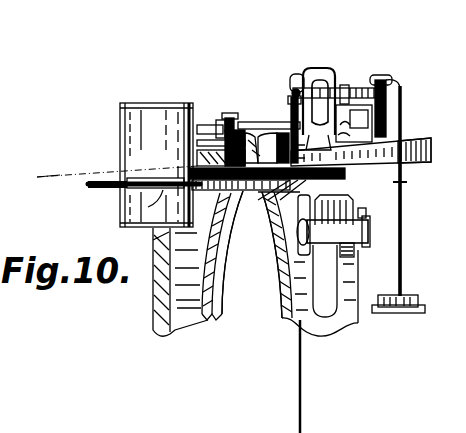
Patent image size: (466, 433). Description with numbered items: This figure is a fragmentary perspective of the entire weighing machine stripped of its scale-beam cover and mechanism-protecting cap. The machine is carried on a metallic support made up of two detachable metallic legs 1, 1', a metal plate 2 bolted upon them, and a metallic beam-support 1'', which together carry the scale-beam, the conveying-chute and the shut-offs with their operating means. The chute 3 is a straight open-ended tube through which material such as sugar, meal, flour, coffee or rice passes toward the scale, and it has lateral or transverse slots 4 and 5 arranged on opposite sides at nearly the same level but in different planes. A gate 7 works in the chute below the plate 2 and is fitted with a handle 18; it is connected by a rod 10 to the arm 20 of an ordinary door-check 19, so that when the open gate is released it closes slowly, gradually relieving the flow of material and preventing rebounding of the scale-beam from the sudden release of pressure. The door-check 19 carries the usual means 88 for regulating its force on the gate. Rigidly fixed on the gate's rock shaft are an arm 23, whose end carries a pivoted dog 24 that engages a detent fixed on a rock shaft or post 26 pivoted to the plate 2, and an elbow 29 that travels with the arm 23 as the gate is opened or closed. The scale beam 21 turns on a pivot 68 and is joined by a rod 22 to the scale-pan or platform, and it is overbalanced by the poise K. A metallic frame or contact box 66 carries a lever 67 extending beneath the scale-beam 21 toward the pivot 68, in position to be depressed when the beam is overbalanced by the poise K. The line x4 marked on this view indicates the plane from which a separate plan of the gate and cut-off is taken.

The detachable metallic leg 1 is at (199, 263).
The detachable metallic leg 1' is at (327, 275).
The metallic beam-support 1'' is at (421, 137).
The metal plate 2 is at (337, 172).
The conveying-chute 3 is at (156, 165).
The transverse slot 4 is at (128, 190).
The transverse slot 5 is at (361, 152).
The gate 7 is at (171, 188).
The rod 10 is at (251, 194).
The handle 18 is at (114, 190).
The door-check 19 is at (368, 233).
The arm 20 is at (275, 238).
The scale beam 21 is at (352, 98).
The rod 22 is at (302, 431).
The arm 23 is at (267, 100).
The dog 24 is at (192, 150).
The rock shaft or post 26 is at (229, 113).
The elbow 29 is at (248, 122).
The contact box 66 is at (386, 125).
The lever 67 is at (391, 87).
The pivot 68 is at (318, 73).
The regulating means 88 is at (362, 213).
The poise K is at (407, 295).
The plan view line x4 is at (35, 174).